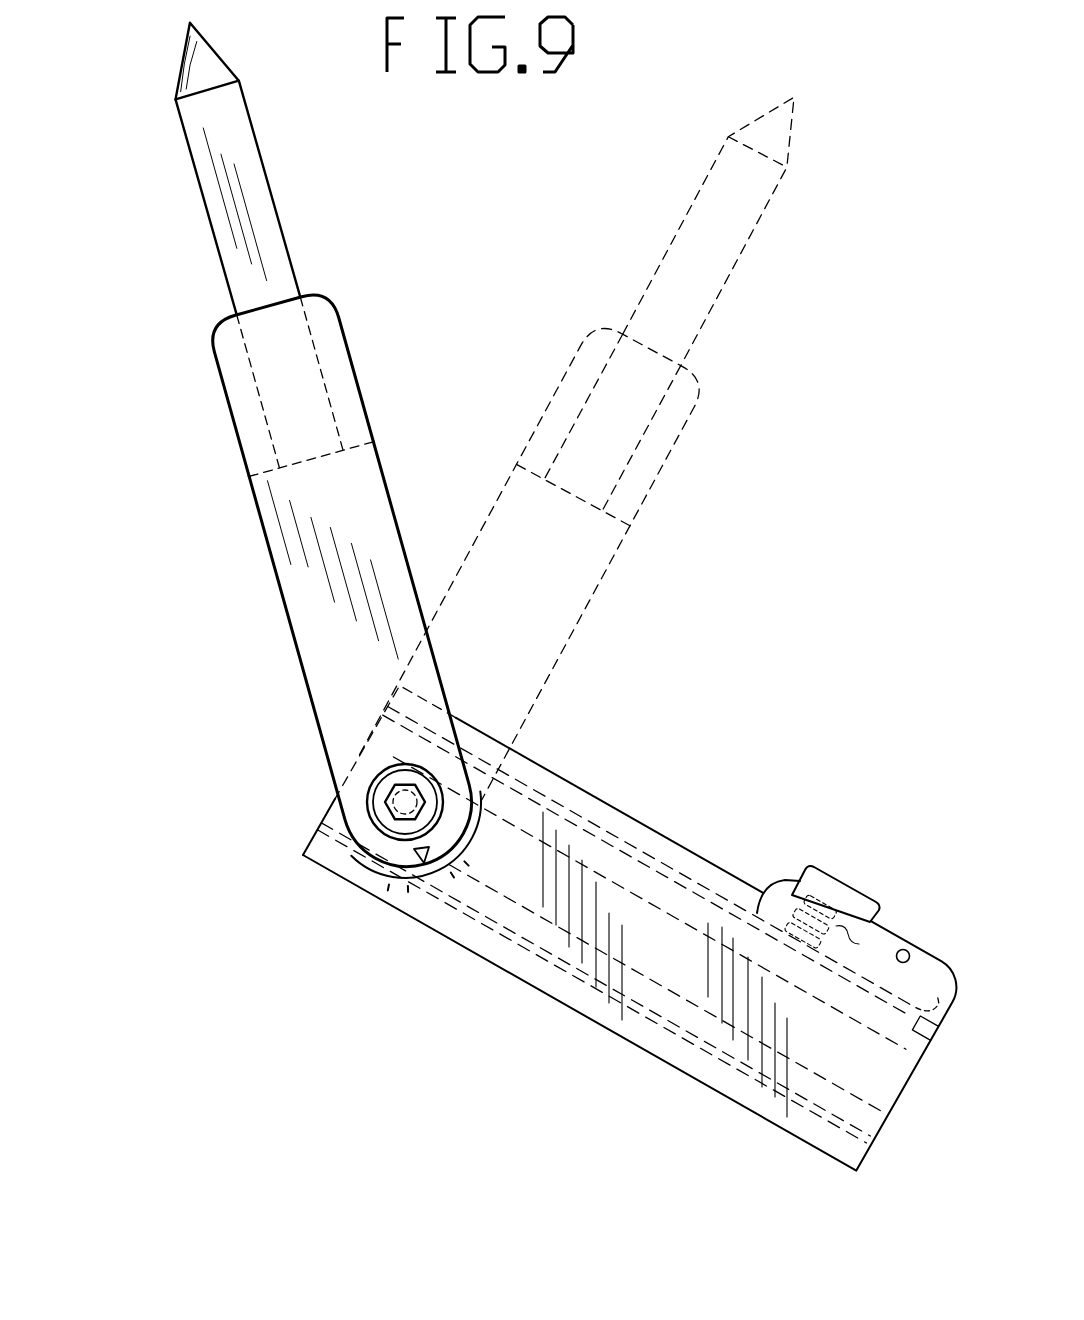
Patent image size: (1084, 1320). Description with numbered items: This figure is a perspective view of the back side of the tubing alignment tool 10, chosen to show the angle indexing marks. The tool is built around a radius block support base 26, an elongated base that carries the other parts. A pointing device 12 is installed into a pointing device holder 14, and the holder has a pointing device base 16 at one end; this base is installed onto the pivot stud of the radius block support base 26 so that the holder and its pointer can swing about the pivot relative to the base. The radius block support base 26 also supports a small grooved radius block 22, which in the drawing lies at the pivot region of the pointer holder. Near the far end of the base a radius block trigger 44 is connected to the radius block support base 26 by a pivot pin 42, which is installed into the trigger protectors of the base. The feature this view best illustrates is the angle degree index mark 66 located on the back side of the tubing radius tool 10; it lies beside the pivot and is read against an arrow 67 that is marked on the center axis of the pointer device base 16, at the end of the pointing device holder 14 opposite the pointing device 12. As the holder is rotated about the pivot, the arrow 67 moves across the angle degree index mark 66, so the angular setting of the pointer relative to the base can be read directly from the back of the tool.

The tubing alignment tool 10 is at (218, 325).
The pointing device 12 is at (262, 158).
The pointing device holder 14 is at (350, 347).
The pointing device base 16 is at (278, 582).
The grooved radius block 22 is at (333, 806).
The radius block support base 26 is at (687, 1073).
The pivot pin 42 is at (913, 955).
The radius block trigger 44 is at (866, 888).
The angle degree index mark 66 is at (410, 856).
The arrow 67 is at (432, 905).